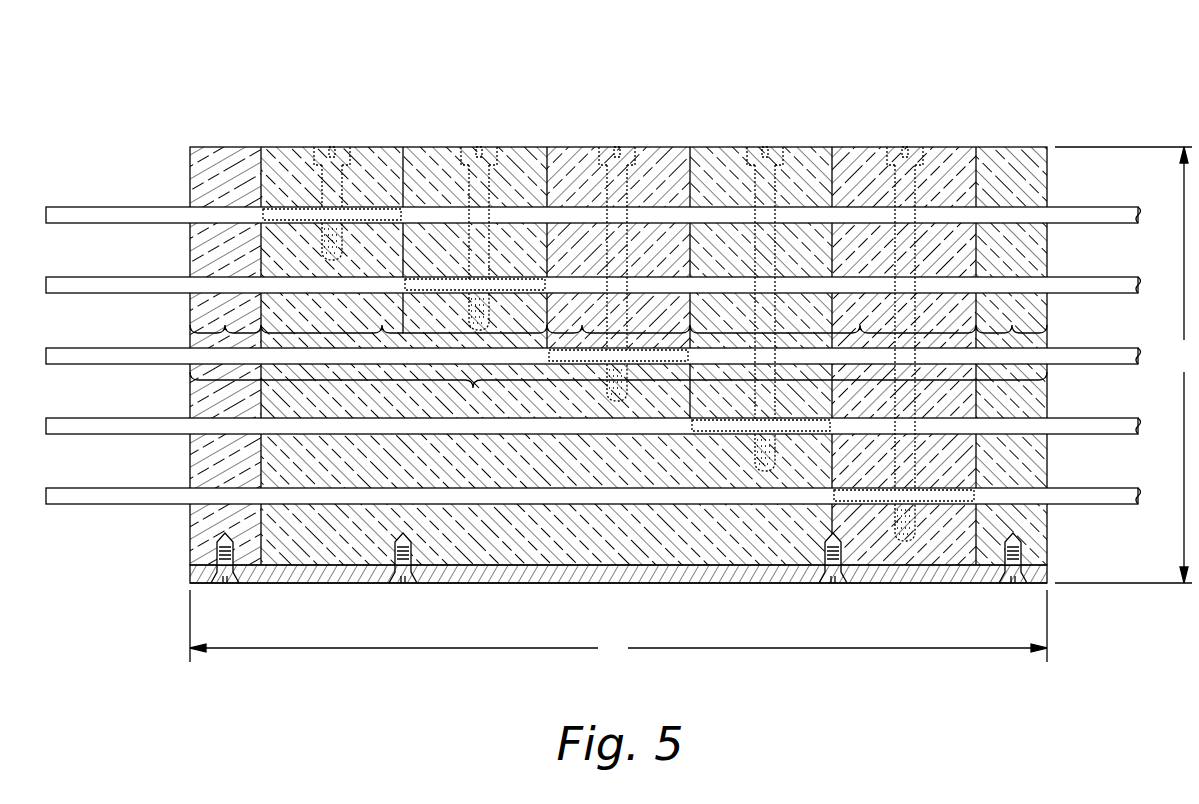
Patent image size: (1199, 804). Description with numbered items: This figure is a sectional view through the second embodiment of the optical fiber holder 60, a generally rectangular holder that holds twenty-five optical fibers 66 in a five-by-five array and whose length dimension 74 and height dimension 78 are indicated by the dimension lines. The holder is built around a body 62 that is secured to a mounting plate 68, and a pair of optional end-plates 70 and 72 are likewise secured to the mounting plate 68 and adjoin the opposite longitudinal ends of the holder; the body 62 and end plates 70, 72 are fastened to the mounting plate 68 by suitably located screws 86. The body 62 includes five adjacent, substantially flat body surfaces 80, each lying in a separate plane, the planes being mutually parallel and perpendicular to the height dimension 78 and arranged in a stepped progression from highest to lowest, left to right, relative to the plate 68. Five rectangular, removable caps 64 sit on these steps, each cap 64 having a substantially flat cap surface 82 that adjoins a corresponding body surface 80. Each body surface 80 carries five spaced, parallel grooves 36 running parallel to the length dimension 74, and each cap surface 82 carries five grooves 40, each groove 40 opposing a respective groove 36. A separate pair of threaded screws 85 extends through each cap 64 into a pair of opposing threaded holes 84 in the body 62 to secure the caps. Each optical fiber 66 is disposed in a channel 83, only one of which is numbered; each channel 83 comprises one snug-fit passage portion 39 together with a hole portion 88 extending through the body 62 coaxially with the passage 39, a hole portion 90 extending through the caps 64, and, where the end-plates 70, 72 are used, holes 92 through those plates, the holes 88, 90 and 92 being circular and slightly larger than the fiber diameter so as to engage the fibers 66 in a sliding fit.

The optical fiber holder 60 is at (182, 55).
The end-plate 70 is at (190, 160).
The end-plate 72 is at (1025, 160).
The cap 64 is at (303, 162).
The body 62 is at (318, 560).
The mounting plate 68 is at (478, 578).
The optical fiber 66 is at (78, 207).
The threaded screw 85 is at (335, 150).
The body surface 80 is at (375, 212).
The cap surface 82 is at (268, 207).
The threaded hole 84 is at (345, 245).
The groove 40 is at (313, 212).
The groove 36 is at (312, 223).
The hole 92 is at (618, 317).
The hole portion 88 is at (404, 316).
The passage portion 39 is at (618, 316).
The hole portion 90 is at (833, 317).
The channel 83 is at (618, 393).
The screw 86 is at (232, 578).
The length dimension 74 is at (618, 626).
The height dimension 78 is at (1126, 365).